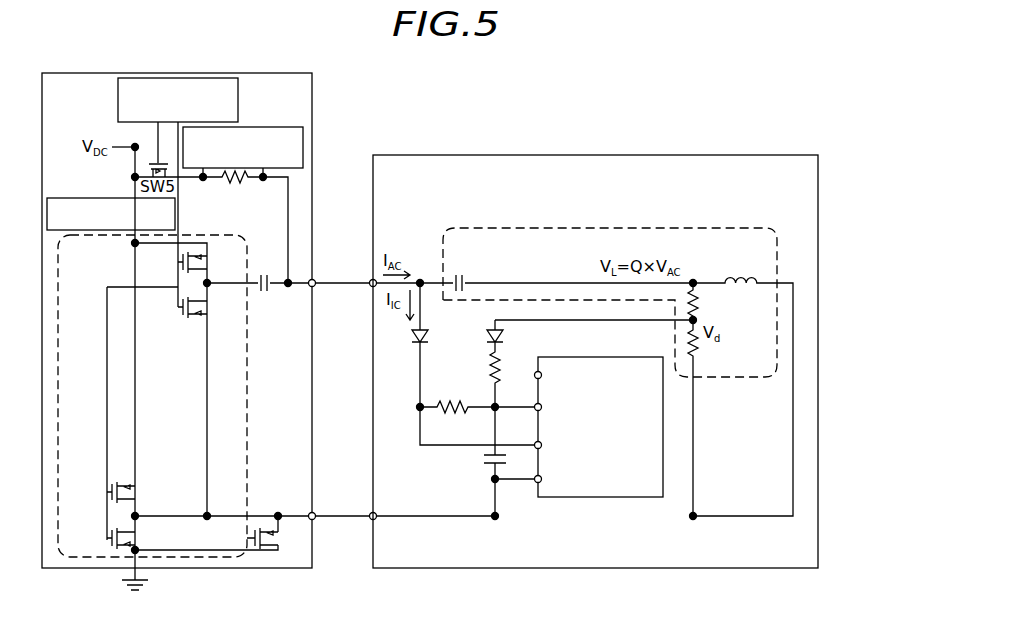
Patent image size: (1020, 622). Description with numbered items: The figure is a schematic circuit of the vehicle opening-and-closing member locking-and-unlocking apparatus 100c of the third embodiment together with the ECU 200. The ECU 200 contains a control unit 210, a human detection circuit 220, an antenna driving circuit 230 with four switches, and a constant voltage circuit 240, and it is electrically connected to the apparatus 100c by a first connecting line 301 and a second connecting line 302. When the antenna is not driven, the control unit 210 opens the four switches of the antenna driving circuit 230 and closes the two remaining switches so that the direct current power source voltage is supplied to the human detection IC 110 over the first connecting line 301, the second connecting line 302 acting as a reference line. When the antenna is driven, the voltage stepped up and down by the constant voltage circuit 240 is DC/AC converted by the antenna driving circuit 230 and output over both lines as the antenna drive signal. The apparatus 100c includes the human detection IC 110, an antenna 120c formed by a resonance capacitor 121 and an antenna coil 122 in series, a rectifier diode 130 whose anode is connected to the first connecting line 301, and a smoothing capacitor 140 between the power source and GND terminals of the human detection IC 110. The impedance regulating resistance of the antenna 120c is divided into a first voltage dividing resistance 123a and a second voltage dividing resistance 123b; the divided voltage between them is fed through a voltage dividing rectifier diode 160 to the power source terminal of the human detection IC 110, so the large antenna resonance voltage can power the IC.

The ECU 200 is at (265, 73).
The control unit 210 is at (118, 110).
The human detection circuit 220 is at (265, 127).
The antenna driving circuit 230 is at (249, 340).
The constant voltage circuit 240 is at (106, 197).
The first connecting line 301 is at (330, 279).
The second connecting line 302 is at (330, 513).
The vehicle opening-and-closing member locking-and-unlocking apparatus 100c is at (778, 155).
The human detection IC 110 is at (598, 358).
The antenna 120c is at (735, 228).
The resonance capacitor 121 is at (470, 275).
The antenna coil 122 is at (727, 278).
The first voltage dividing resistance 123a is at (707, 312).
The second voltage dividing resistance 123b is at (707, 349).
The rectifier diode 130 is at (415, 354).
The smoothing capacitor 140 is at (480, 462).
The voltage dividing rectifier diode 160 is at (491, 355).